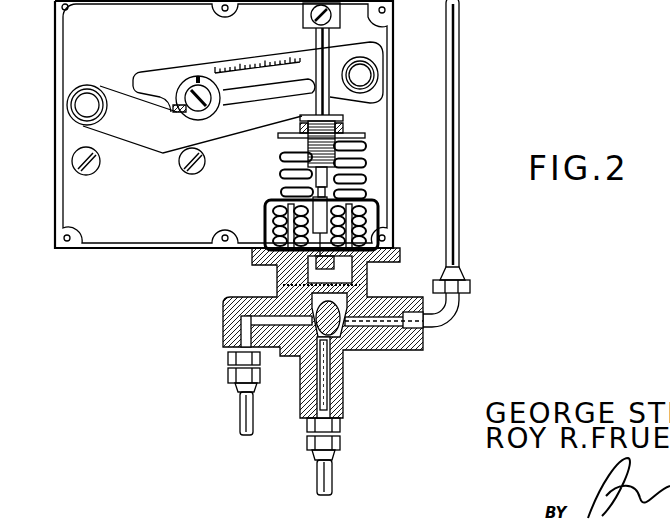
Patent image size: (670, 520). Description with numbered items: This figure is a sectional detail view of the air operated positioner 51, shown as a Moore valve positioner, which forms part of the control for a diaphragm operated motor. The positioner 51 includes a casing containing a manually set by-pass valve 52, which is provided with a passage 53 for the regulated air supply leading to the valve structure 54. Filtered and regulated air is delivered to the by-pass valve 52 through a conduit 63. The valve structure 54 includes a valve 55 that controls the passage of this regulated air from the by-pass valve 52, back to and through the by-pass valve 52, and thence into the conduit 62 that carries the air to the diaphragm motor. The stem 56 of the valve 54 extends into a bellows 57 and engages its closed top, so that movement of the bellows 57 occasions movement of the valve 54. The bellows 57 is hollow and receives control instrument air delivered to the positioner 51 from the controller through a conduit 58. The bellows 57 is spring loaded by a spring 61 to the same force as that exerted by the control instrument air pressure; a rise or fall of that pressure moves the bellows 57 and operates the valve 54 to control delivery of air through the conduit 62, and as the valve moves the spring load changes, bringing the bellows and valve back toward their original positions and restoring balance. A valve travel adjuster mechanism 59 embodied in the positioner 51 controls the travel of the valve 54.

The positioner 51 is at (372, 32).
The by-pass valve 52 is at (343, 340).
The passage 53 is at (340, 352).
The valve structure 54 is at (357, 284).
The valve 55 is at (378, 246).
The stem 56 is at (292, 203).
The bellows 57 is at (267, 226).
The conduit 58 is at (242, 412).
The valve travel adjuster mechanism 59 is at (188, 84).
The spring 61 is at (365, 162).
The conduit 62 is at (455, 68).
The conduit 63 is at (332, 478).